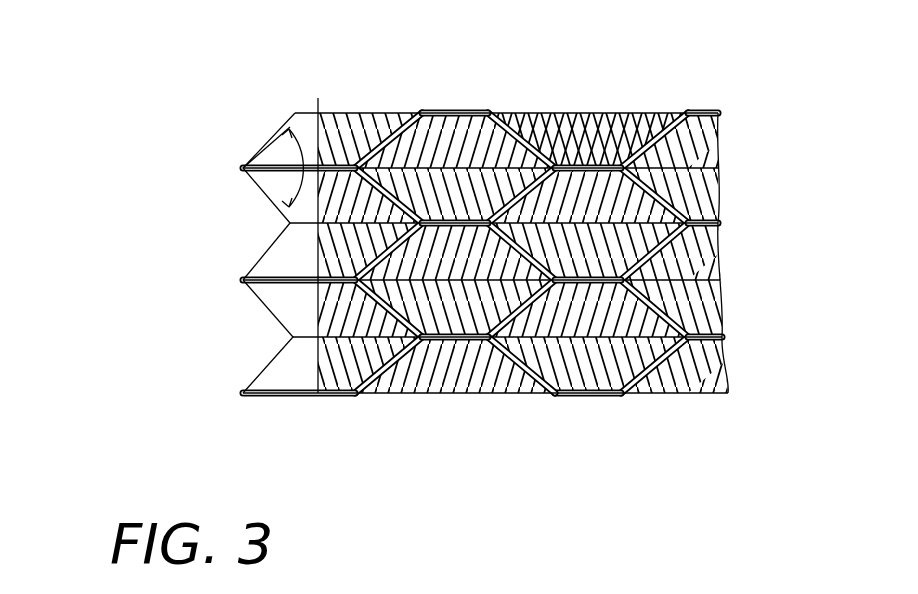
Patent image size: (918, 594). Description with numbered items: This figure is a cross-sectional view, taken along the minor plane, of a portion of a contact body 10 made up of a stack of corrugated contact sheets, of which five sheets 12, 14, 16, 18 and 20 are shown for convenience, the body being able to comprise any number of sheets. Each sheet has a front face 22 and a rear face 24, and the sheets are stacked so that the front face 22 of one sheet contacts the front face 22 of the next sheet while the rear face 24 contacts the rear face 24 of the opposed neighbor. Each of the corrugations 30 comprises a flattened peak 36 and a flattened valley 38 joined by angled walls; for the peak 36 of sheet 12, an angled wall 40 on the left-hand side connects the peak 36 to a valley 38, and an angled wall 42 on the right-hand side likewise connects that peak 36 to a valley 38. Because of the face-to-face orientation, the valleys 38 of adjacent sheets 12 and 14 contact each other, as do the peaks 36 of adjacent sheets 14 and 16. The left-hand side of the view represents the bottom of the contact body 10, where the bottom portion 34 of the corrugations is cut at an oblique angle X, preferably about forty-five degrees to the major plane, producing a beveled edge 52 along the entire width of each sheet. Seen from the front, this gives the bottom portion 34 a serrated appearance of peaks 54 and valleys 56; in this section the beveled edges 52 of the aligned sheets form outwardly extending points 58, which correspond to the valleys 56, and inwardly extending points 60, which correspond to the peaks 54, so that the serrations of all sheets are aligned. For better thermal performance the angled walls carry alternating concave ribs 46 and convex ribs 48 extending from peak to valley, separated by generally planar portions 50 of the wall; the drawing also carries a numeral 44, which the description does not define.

The contact body 10 is at (200, 383).
The first sheet 12 is at (712, 152).
The sheet 14 is at (712, 197).
The sheet 16 is at (700, 248).
The sheet 18 is at (710, 302).
The sheet 20 is at (700, 365).
The front face 22 is at (648, 130).
The rear face 24 is at (577, 125).
The corrugations 30 is at (433, 62).
The bottom portion 34 is at (290, 127).
The peak 36 is at (490, 122).
The valley 38 is at (326, 135).
The angled wall 40 is at (384, 128).
The angled wall 42 is at (525, 125).
The crossing point 44 is at (690, 112).
The concave ribs 46 is at (403, 393).
The convex ribs 48 is at (438, 373).
The planar portions 50 is at (422, 380).
The beveled edge 52 is at (270, 137).
The peaks 54 is at (289, 120).
The valleys 56 is at (247, 162).
The outwardly extending points 58 is at (242, 166).
The inwardly extending points 60 is at (293, 337).